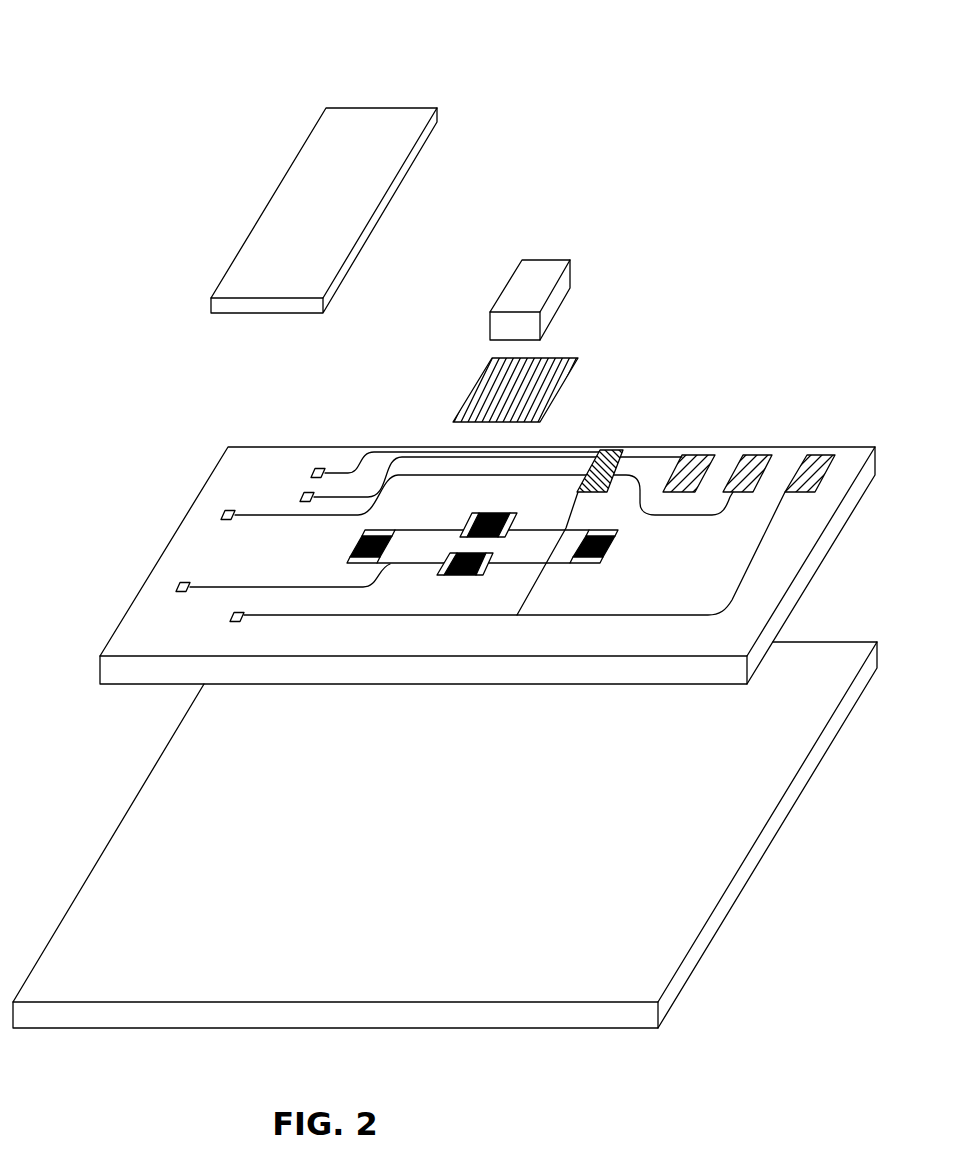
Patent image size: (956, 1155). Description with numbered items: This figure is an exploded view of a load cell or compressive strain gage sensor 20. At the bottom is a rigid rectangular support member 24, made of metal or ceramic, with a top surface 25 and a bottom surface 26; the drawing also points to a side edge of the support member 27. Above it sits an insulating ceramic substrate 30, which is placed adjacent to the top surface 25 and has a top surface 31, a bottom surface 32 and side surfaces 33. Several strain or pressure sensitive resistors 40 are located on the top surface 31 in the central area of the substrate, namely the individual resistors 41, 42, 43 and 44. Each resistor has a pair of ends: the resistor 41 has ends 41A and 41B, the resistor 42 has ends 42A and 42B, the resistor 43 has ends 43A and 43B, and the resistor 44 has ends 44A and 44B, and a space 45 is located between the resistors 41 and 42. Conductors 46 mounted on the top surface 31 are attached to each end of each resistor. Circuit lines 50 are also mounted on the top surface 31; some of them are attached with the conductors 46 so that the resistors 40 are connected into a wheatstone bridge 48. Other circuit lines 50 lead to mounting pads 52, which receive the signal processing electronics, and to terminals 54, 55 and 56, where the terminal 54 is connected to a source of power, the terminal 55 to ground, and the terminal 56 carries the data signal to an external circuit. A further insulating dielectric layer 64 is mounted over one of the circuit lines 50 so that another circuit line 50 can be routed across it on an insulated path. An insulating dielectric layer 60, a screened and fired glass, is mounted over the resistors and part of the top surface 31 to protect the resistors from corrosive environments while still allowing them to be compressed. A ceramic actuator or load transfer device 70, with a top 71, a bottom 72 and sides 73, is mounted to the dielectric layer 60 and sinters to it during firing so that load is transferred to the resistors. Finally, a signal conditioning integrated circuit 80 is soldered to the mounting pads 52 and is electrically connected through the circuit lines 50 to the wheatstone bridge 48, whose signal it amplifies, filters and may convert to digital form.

The compressive strain gage sensor 20 is at (143, 87).
The support member 24 is at (445, 867).
The top surface 25 is at (93, 930).
The bottom surface 26 is at (175, 1028).
The side edge of base substrate 27 is at (600, 1010).
The ceramic substrate 30 is at (449, 618).
The top surface 31 is at (142, 598).
The bottom surface 32 is at (342, 665).
The side surfaces 33 is at (297, 675).
The strain or pressure sensitive resistors 40 is at (338, 392).
The resistor 41 is at (447, 584).
The end 41A is at (442, 577).
The end 41B is at (472, 576).
The resistor 42 is at (509, 481).
The end 42A is at (477, 512).
The end 42B is at (517, 516).
The resistor 43 is at (321, 546).
The end 43A is at (365, 531).
The end 43B is at (352, 555).
The resistor 44 is at (638, 554).
The end 44A is at (620, 533).
The end 44B is at (611, 548).
The space 45 is at (487, 545).
The conductors 46 is at (517, 523).
The wheatstone bridge 48 is at (550, 697).
The circuit lines 50 is at (357, 465).
The mounting pads 52 is at (220, 512).
The terminal 54 is at (688, 463).
The terminal 55 is at (748, 463).
The terminal 56 is at (817, 462).
The insulating dielectric layer 60 is at (482, 378).
The insulating dielectric layer 64 is at (634, 455).
The ceramic actuator 70 is at (547, 261).
The top 71 is at (527, 285).
The bottom 72 is at (562, 305).
The sides 73 is at (508, 325).
The integrated circuit 80 is at (308, 273).